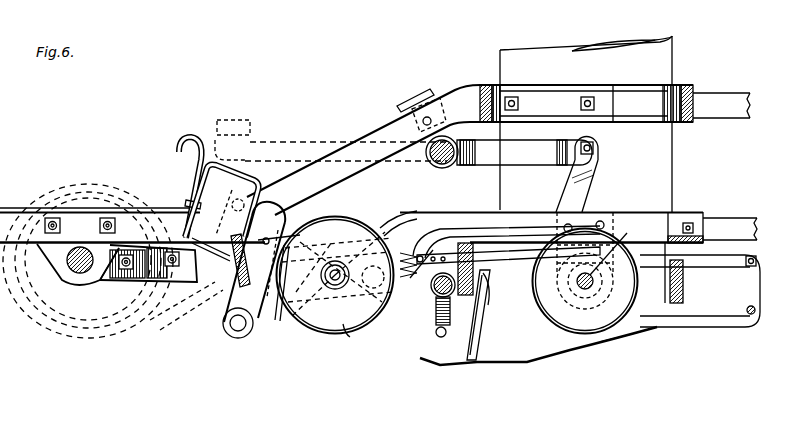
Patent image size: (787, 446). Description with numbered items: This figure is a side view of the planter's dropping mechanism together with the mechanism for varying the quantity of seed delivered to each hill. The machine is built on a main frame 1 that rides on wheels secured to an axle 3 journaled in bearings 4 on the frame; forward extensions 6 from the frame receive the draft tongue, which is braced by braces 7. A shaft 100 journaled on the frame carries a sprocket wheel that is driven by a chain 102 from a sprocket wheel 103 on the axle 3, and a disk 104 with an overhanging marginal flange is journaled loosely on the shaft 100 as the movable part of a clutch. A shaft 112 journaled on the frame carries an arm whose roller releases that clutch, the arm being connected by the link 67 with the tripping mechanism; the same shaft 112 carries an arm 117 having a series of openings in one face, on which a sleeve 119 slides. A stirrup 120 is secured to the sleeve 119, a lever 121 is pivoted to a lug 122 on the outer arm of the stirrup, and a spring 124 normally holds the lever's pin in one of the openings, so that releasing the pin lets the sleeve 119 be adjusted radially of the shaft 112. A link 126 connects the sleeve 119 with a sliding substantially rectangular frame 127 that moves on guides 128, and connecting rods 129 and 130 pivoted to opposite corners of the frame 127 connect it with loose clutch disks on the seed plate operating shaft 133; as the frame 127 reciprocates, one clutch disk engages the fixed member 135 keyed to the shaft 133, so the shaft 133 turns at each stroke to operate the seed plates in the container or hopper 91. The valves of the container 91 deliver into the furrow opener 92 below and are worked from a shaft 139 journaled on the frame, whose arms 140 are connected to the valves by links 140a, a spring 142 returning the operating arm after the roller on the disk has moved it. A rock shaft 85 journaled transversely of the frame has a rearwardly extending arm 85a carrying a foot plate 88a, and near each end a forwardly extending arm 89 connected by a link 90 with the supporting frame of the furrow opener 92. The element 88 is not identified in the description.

The main frame 1 is at (2, 212).
The axle 3 is at (72, 272).
The bearings 4 is at (77, 282).
The forward extensions 6 is at (381, 128).
The braces 7 is at (722, 118).
The link 67 is at (38, 249).
The rock shaft 85 is at (442, 168).
The rearwardly extending arm 85a is at (290, 140).
The plate 88 is at (421, 106).
The foot plate 88a is at (225, 118).
The forwardly extending arm 89 is at (495, 166).
The link 90 is at (594, 173).
The container or hopper 91 is at (668, 82).
The furrow opener 92 is at (538, 346).
The shaft 100 is at (335, 284).
The chain 102 is at (173, 322).
The sprocket wheel 103 is at (117, 318).
The disk 104 is at (347, 331).
The shaft 112 is at (236, 333).
The arm 117 is at (300, 226).
The sleeve 119 is at (281, 294).
The stirrup 120 is at (243, 172).
The lever 121 is at (184, 152).
The lug 122 is at (190, 200).
The spring 124 is at (208, 266).
The link 126 is at (380, 233).
The sliding frame 127 is at (700, 291).
The guides 128 is at (490, 305).
The connecting rod 129 is at (660, 330).
The connecting rod 130 is at (497, 263).
The seed plate operating shaft 133 is at (603, 243).
The fixed clutch member 135 is at (585, 281).
The shaft 139 is at (504, 238).
The arms 140 is at (437, 318).
The links 140a is at (442, 338).
The spring 142 is at (412, 280).